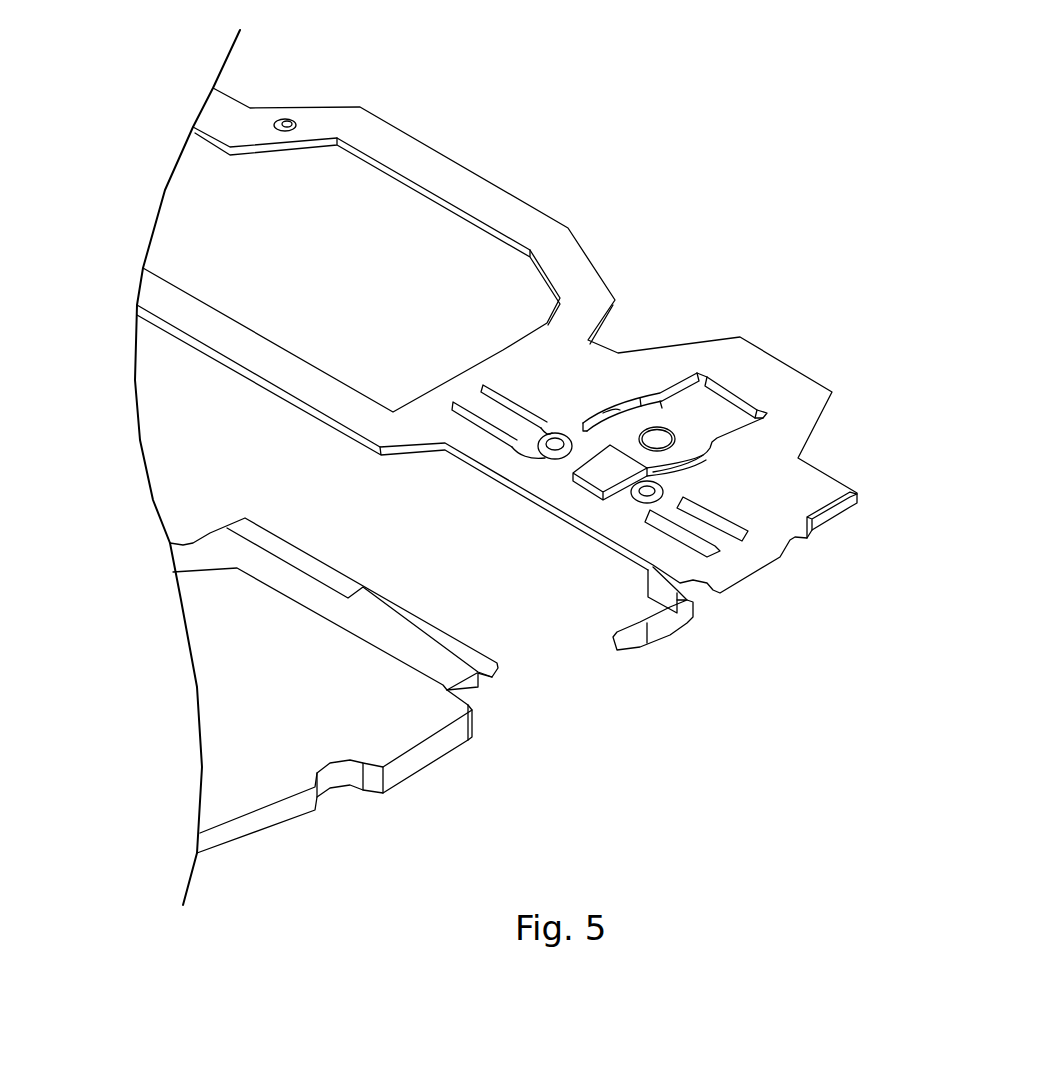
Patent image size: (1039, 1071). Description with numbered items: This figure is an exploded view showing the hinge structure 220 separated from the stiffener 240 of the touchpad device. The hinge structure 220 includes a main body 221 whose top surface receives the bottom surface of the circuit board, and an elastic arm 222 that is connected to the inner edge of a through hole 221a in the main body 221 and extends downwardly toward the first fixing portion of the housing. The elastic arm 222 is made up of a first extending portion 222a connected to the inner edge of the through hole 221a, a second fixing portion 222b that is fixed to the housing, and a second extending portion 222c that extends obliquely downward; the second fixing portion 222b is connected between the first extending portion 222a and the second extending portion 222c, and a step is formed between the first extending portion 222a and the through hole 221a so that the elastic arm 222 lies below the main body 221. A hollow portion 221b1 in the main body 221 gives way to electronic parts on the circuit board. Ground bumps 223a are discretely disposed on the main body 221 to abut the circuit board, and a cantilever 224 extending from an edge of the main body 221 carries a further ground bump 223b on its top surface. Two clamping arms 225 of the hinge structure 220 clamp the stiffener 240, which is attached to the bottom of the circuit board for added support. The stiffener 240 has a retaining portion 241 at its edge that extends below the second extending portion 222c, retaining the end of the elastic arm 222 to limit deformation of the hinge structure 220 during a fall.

The hinge structure 220 is at (585, 370).
The main body 221 is at (788, 393).
The through hole 221a is at (576, 412).
The hollow portion 221b1 is at (478, 225).
The elastic arm 222 is at (745, 333).
The first extending portion 222a is at (710, 412).
The second fixing portion 222b is at (640, 422).
The second extending portion 222c is at (603, 467).
The ground bump 223a is at (293, 122).
The ground bump 223b is at (660, 492).
The cantilever 224 is at (687, 522).
The clamping arm 225 is at (667, 627).
The stiffener 240 is at (280, 467).
The retaining portion 241 is at (440, 638).